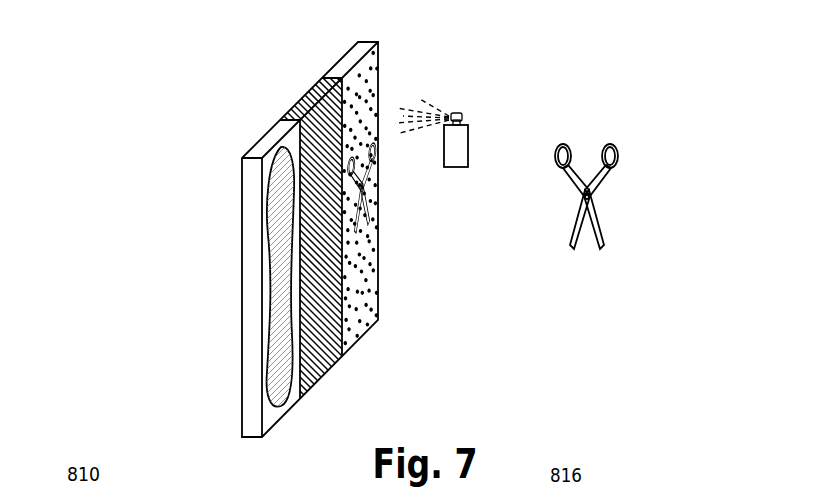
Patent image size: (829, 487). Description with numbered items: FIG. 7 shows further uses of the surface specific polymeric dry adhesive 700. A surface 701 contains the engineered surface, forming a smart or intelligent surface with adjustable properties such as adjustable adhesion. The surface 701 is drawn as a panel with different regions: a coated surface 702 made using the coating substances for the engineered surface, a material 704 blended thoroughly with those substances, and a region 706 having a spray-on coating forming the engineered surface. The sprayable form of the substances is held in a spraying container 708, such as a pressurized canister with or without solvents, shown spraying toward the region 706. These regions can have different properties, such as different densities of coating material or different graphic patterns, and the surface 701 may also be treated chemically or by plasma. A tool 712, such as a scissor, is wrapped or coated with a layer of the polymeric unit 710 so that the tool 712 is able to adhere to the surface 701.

The surface specific polymeric dry adhesive 700 is at (85, 49).
The surface 701 is at (180, 150).
The coated surface 702 is at (268, 202).
The material 704 is at (300, 104).
The region 706 is at (360, 93).
The spraying container 708 is at (464, 132).
The polymeric unit 710 is at (375, 160).
The tool 712 is at (373, 213).